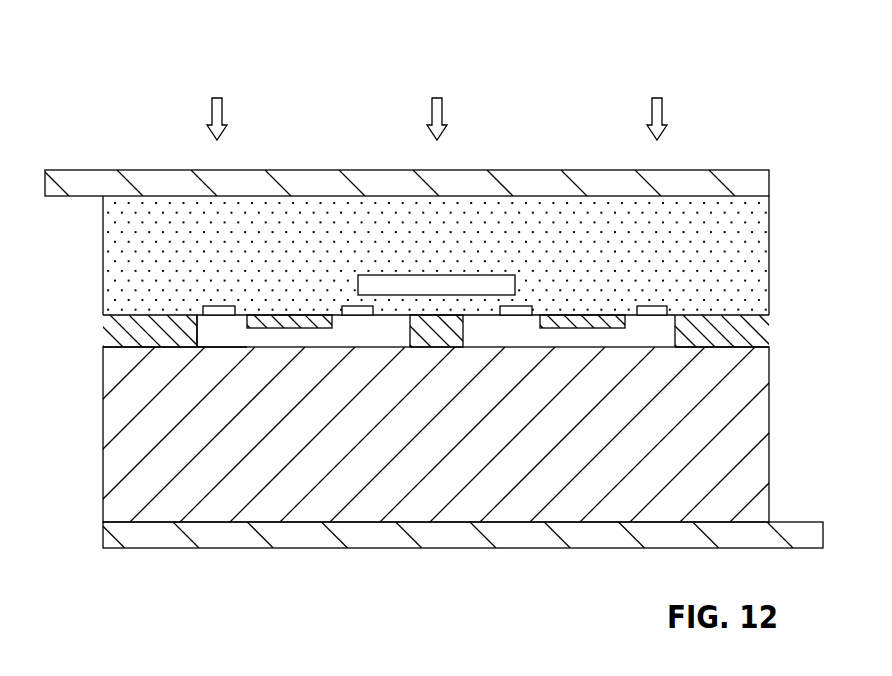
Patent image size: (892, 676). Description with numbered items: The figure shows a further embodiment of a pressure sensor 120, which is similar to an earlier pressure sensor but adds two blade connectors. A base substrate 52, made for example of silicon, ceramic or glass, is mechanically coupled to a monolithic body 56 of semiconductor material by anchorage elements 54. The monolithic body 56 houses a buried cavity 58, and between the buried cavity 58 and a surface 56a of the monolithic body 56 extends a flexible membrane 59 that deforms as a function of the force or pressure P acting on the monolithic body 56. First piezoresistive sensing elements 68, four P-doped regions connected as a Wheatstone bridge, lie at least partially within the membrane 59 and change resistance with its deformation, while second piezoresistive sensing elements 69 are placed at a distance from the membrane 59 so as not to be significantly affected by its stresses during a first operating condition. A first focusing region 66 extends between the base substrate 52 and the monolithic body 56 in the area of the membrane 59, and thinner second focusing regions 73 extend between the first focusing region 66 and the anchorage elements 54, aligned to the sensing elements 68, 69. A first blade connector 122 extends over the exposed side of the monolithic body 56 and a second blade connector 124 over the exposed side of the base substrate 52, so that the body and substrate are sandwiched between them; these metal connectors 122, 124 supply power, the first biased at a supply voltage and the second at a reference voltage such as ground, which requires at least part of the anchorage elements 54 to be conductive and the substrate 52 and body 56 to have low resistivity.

The pressure sensor 120 is at (117, 131).
The first blade connector 122 is at (300, 170).
The second blade connector 124 is at (172, 537).
The base substrate 52 is at (112, 470).
The anchorage elements 54 is at (112, 333).
The monolithic body 56 is at (118, 252).
The surface of the monolithic body 56a is at (242, 318).
The buried cavity 58 is at (414, 283).
The flexible membrane 59 is at (438, 303).
The first focusing region 66 is at (433, 338).
The first piezoresistive sensing elements 68 is at (348, 305).
The second piezoresistive sensing elements 69 is at (218, 305).
The second focusing regions 73 is at (290, 329).
The force P is at (212, 114).